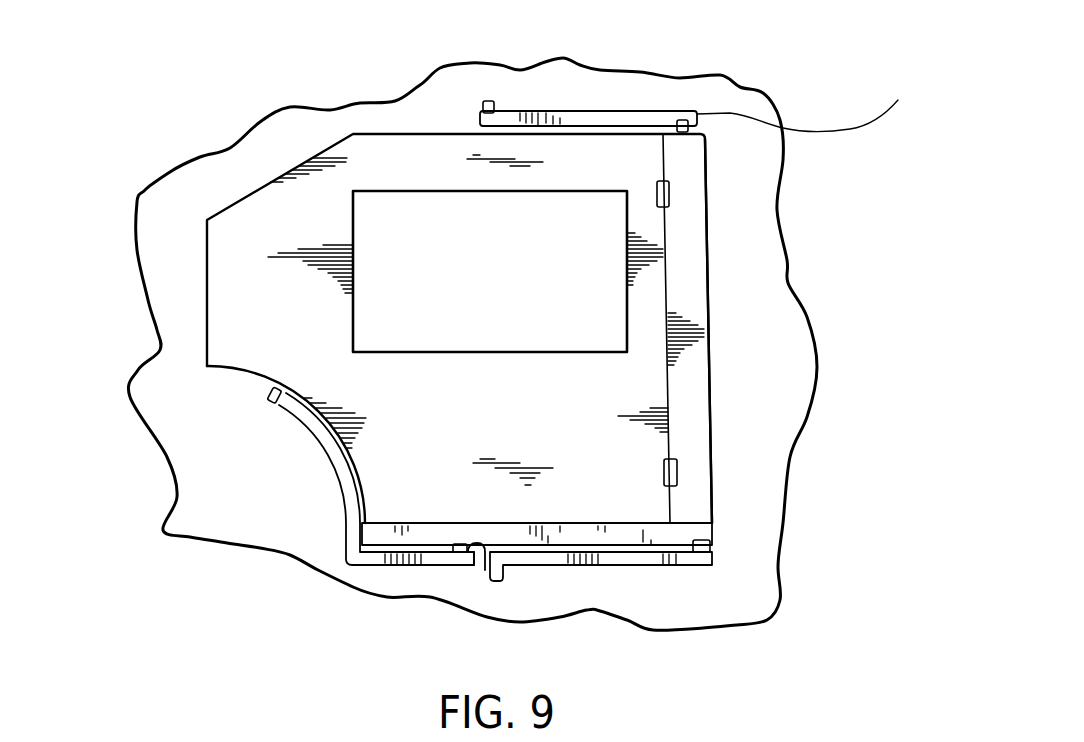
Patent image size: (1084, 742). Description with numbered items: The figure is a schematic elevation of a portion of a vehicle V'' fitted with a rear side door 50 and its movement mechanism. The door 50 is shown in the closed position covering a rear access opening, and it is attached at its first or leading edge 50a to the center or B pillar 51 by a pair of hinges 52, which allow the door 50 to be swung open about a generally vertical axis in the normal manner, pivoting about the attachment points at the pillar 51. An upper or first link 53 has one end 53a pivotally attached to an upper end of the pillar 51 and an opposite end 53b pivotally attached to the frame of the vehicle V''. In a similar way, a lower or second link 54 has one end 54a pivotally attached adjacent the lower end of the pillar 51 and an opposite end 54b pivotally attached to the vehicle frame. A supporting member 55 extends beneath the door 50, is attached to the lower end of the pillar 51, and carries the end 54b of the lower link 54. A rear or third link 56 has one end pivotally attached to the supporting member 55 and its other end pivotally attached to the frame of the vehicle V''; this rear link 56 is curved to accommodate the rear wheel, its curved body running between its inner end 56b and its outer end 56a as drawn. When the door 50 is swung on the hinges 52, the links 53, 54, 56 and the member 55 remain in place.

The rear side door 50 is at (240, 217).
The first or leading edge 50a is at (667, 382).
The pillar 51 is at (695, 293).
The hinges 52 is at (672, 192).
The upper or first link 53 is at (603, 111).
The one end of upper link 53a is at (768, 142).
The opposite end of upper link 53b is at (482, 104).
The lower or second link 54 is at (630, 567).
The one end of lower link 54a is at (708, 545).
The opposite end of lower link 54b is at (490, 570).
The supporting member 55 is at (697, 531).
The rear or third link 56 is at (330, 460).
The end of curved strip 56a is at (475, 551).
The tab of curved strip 56b is at (267, 390).
The vehicle V'' is at (813, 103).